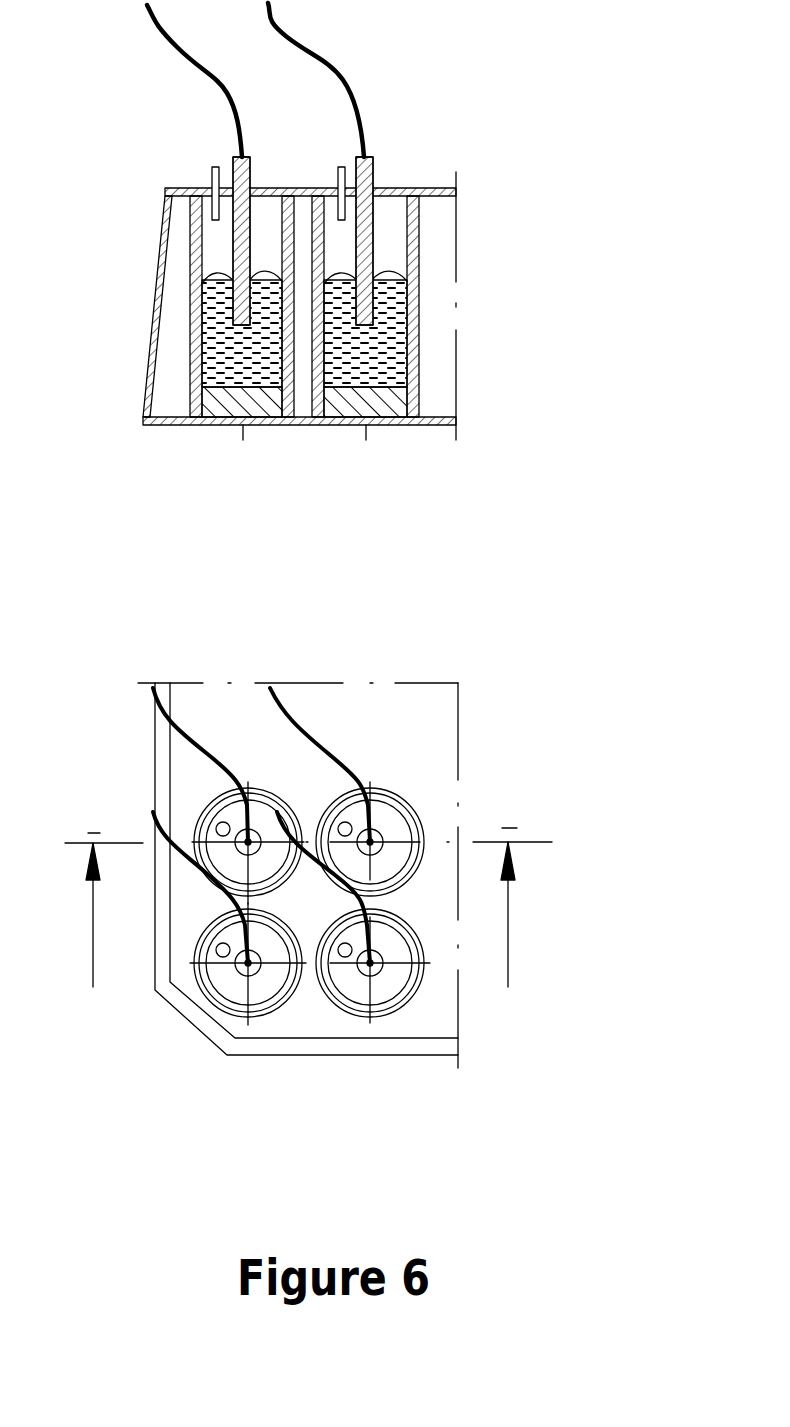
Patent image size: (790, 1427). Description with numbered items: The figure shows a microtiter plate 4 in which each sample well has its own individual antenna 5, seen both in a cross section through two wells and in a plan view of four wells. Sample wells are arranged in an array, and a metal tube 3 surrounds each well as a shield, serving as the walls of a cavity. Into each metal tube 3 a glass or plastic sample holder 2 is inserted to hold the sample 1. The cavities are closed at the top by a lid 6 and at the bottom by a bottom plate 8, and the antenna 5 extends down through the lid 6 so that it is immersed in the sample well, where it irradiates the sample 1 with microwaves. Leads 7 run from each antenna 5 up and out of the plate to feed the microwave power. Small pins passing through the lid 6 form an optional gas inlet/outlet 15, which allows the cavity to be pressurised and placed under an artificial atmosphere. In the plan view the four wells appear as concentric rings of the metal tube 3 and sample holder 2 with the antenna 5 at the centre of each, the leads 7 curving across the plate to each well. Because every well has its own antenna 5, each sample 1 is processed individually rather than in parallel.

The sample 1 is at (317, 666).
The sample holder 2 is at (387, 413).
The metal tube 3 is at (283, 1000).
The microtiter plate 4 is at (400, 737).
The antenna 5 is at (236, 257).
The lid 6 is at (432, 188).
The electrode lead cable 7 is at (340, 80).
The bottom plate 8 is at (170, 428).
The gas inlet/outlet 15 is at (210, 182).